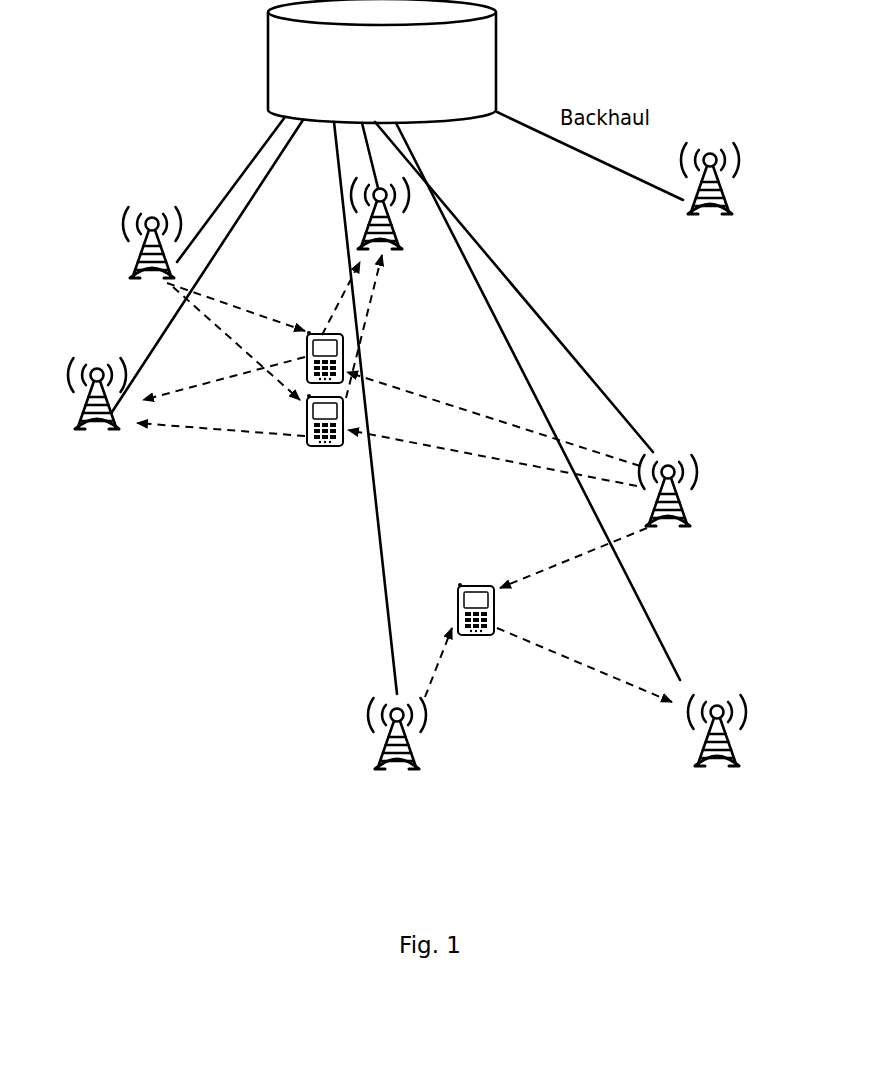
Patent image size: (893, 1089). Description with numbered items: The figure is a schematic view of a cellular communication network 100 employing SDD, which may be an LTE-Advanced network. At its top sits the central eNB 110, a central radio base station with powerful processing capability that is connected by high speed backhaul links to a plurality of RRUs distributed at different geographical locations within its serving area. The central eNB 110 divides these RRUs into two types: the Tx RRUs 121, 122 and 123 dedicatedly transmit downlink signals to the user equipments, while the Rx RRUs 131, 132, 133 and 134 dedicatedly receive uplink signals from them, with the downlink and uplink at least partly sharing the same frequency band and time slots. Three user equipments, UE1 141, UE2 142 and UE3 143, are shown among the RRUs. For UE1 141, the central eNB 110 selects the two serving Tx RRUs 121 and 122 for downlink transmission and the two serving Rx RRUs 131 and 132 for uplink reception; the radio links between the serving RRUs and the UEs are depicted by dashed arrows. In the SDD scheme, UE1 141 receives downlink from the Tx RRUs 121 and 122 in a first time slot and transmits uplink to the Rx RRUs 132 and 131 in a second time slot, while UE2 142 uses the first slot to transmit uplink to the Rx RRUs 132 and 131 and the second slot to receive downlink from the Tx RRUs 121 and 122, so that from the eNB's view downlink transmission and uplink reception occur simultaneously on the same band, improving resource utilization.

The cellular communication network 100 is at (392, 404).
The central eNB 110 is at (382, 61).
The Tx RRU 121 is at (118, 227).
The Tx RRU 122 is at (707, 514).
The Tx RRU 123 is at (330, 733).
The Rx RRU 131 is at (318, 215).
The Rx RRU 132 is at (110, 419).
The Rx RRU 133 is at (669, 198).
The Rx RRU 134 is at (639, 745).
The UE1 141 is at (386, 357).
The UE2 142 is at (311, 439).
The UE3 143 is at (490, 630).